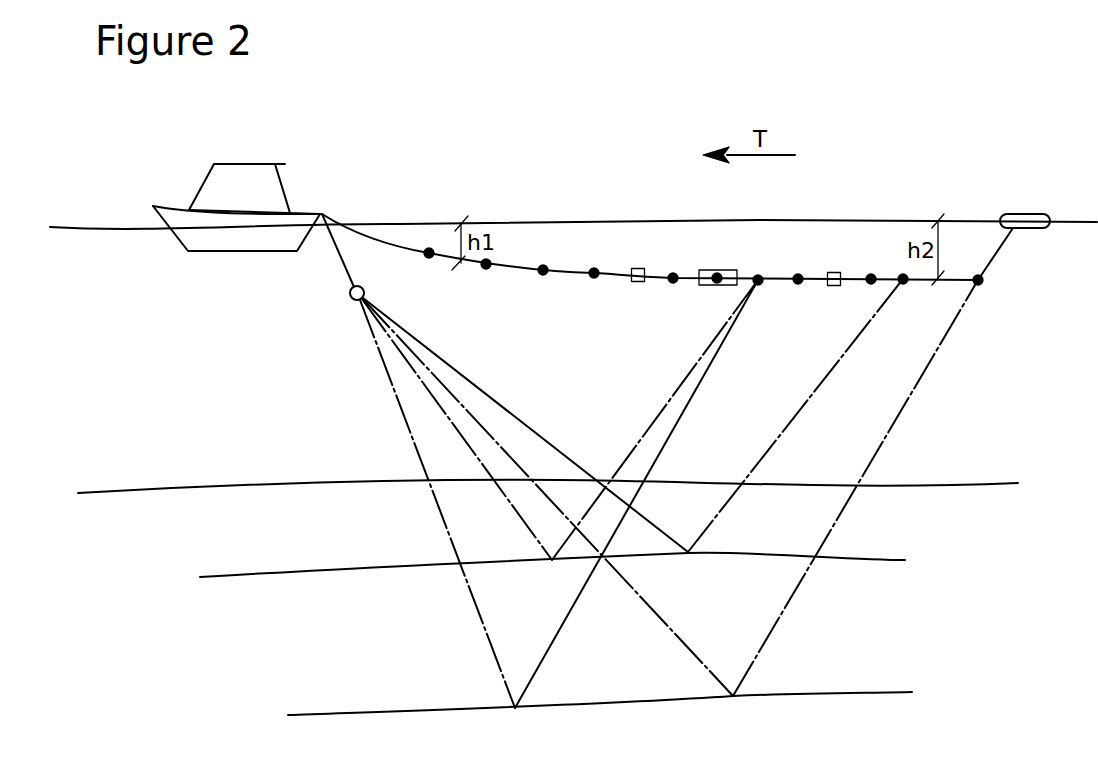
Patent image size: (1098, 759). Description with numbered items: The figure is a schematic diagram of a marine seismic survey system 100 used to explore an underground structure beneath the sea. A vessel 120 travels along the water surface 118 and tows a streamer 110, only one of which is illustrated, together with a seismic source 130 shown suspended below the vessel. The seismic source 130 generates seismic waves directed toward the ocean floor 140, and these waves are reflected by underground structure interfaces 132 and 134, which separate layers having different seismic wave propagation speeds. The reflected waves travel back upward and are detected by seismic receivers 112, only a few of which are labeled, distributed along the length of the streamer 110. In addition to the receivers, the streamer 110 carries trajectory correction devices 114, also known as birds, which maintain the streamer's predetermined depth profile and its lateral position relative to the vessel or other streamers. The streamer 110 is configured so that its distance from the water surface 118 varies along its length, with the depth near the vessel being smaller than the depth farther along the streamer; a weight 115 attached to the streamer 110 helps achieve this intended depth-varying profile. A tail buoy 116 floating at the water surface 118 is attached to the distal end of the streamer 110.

The marine seismic survey system 100 is at (600, 111).
The streamer 110 is at (518, 271).
The seismic receivers 112 is at (430, 259).
The trajectory correction devices 114 is at (638, 268).
The weight 115 is at (718, 270).
The tail buoy 116 is at (1022, 218).
The water surface 118 is at (393, 225).
The vessel 120 is at (245, 165).
The seismic source 130 is at (348, 302).
The underground structure interface 132 is at (878, 558).
The underground structure interface 134 is at (835, 695).
The ocean floor 140 is at (935, 483).